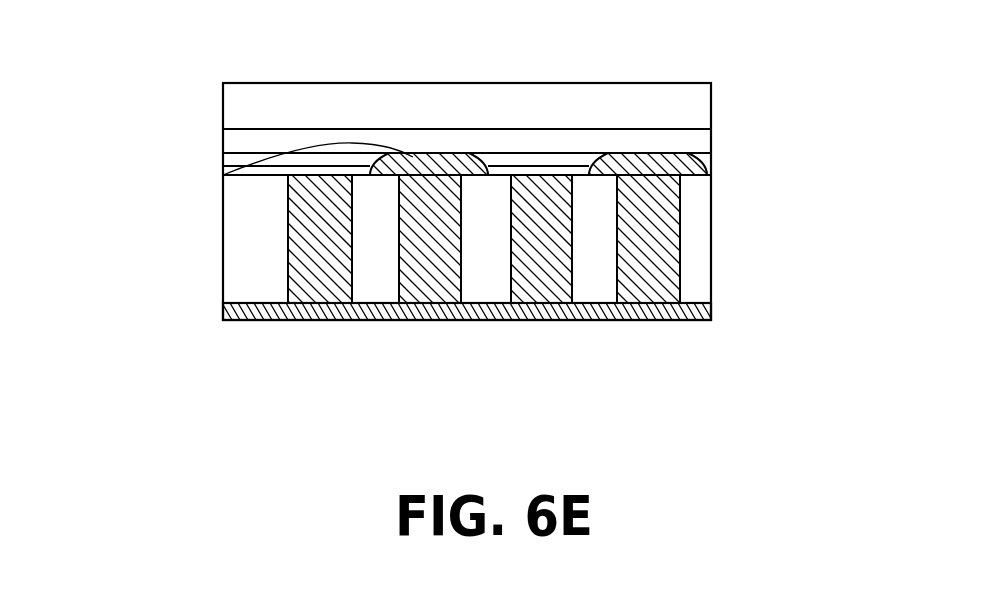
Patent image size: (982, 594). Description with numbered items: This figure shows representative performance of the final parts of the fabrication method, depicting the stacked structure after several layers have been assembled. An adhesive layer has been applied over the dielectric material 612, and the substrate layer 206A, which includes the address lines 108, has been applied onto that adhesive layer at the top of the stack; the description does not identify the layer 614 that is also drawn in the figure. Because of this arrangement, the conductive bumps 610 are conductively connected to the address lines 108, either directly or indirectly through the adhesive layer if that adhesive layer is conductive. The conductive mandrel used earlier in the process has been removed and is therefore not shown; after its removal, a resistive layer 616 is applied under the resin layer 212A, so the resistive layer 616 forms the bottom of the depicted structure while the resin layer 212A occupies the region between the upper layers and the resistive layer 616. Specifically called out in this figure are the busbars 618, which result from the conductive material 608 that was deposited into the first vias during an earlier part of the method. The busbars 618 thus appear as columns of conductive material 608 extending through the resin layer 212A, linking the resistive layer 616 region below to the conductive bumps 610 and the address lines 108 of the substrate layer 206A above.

The substrate layer 206A is at (703, 101).
The address lines 108 is at (703, 140).
The conductive layer 614 is at (585, 160).
The dielectric material 612 is at (521, 173).
The conductive bumps 610 is at (223, 173).
The resin layer 212A is at (252, 208).
The conductive material 608 is at (433, 236).
The busbars 618 is at (326, 288).
The resistive layer 616 is at (223, 312).